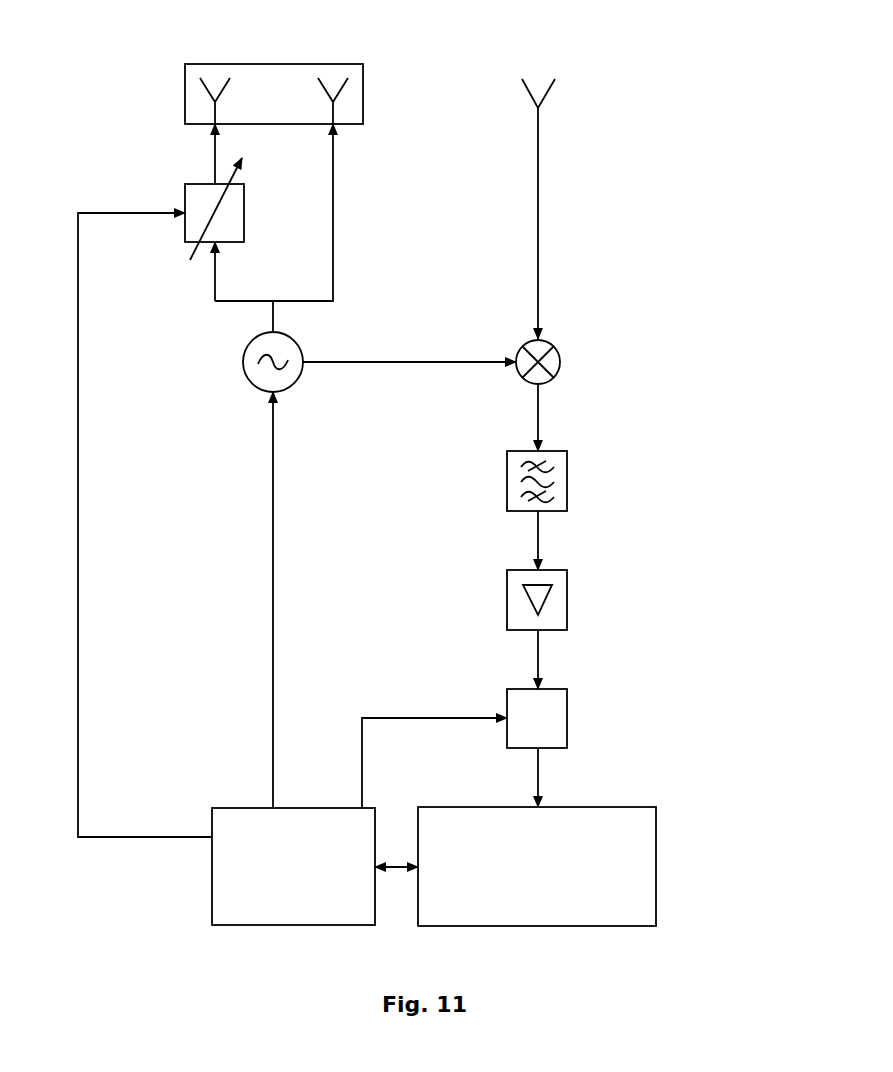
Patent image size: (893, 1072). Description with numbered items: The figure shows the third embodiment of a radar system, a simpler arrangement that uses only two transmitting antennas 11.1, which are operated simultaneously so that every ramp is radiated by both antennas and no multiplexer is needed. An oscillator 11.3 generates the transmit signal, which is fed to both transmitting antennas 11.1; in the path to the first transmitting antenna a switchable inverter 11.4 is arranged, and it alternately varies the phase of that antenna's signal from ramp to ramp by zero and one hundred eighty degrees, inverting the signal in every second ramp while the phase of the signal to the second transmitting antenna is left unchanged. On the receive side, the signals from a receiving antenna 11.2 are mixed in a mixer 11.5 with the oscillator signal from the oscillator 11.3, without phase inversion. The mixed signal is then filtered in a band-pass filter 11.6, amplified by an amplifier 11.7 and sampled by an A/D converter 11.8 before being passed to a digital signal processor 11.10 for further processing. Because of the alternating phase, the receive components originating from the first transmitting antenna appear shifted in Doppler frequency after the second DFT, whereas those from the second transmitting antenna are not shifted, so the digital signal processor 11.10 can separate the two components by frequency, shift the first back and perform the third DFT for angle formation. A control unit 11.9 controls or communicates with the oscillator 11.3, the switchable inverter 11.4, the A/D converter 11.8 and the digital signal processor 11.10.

The transmitting antennas 11.1 is at (185, 93).
The receiving antenna 11.2 is at (545, 97).
The oscillator 11.3 is at (297, 378).
The switchable inverter 11.4 is at (185, 227).
The mixer 11.5 is at (563, 363).
The band-pass filter 11.6 is at (567, 481).
The amplifier 11.7 is at (567, 600).
The A/D converter 11.8 is at (567, 718).
The control unit 11.9 is at (212, 867).
The digital signal processor 11.10 is at (656, 867).